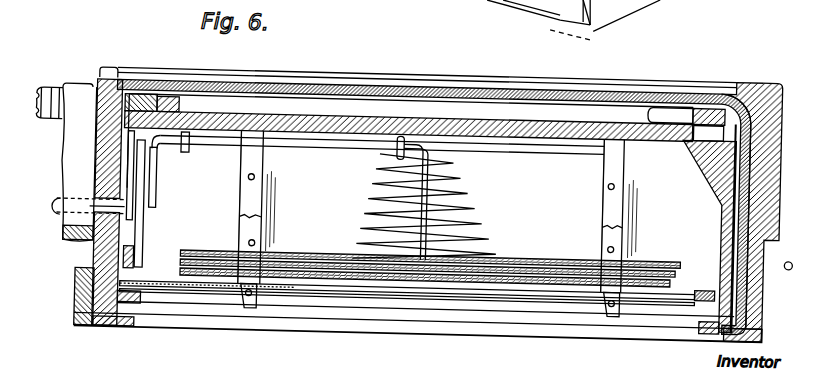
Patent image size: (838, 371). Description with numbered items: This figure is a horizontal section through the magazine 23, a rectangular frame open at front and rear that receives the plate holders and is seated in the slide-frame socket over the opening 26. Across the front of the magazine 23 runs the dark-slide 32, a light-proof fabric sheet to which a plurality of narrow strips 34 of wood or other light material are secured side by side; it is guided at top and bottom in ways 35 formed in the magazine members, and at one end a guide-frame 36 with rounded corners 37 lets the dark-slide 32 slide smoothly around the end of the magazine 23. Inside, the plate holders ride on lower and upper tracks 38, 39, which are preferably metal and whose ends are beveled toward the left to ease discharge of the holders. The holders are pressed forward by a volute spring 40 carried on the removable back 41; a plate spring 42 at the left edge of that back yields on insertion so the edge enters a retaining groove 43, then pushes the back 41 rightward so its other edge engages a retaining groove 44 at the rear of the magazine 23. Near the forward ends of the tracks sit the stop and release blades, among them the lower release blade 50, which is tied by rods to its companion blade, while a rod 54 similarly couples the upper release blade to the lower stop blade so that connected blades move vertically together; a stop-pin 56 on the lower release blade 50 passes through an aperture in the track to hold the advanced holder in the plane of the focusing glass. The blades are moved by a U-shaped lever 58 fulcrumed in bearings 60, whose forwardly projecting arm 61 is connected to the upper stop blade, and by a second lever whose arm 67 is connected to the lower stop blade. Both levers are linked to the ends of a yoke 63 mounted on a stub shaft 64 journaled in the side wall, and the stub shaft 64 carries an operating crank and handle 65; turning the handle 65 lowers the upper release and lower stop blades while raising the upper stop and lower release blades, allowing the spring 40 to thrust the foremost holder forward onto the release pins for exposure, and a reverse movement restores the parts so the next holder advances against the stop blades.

The magazine 23 is at (277, 33).
The opening 26 is at (592, 252).
The dark-slide 32 is at (419, 65).
The narrow strips 34 is at (773, 276).
The ways 35 is at (427, 330).
The guide-frame 36 is at (708, 237).
The rounded corners 37 is at (462, 190).
The lower tracks 38 is at (419, 212).
The upper tracks 39 is at (448, 211).
The volute spring 40 is at (431, 207).
The removable back 41 is at (331, 47).
The plate spring 42 is at (687, 91).
The retaining groove 43 is at (724, 100).
The retaining groove 44 is at (144, 76).
The lower release blade 50 is at (553, 24).
The rod 54 is at (418, 271).
The stop-pin 56 is at (425, 326).
The upper U-shaped lever 58 is at (377, 161).
The bearings 60 is at (306, 61).
The forwardly projecting arm 61 is at (446, 202).
The yoke 63 is at (149, 200).
The stub shaft 64 is at (82, 233).
The operating crank and handle 65 is at (76, 201).
The arm 67 is at (168, 182).